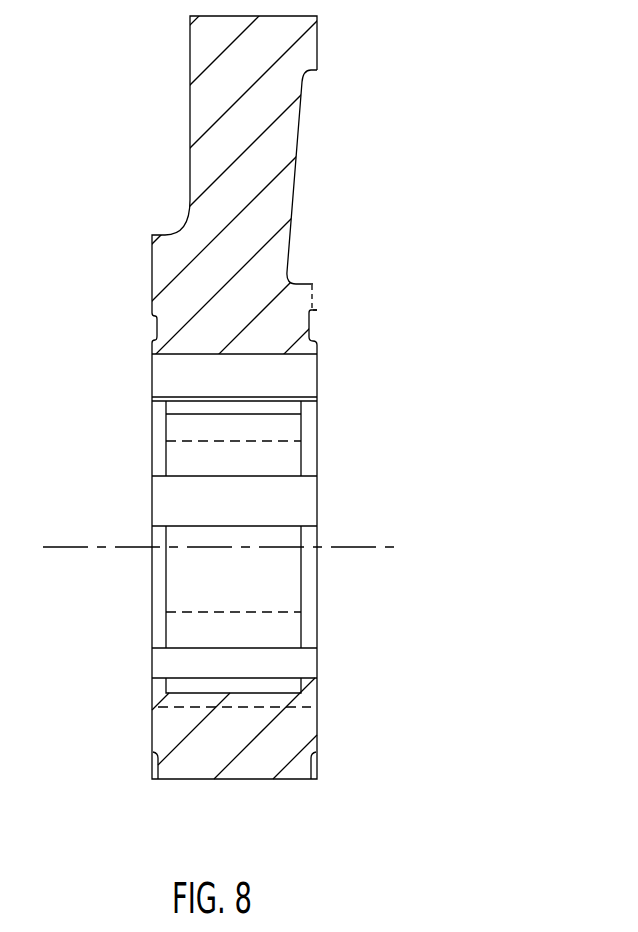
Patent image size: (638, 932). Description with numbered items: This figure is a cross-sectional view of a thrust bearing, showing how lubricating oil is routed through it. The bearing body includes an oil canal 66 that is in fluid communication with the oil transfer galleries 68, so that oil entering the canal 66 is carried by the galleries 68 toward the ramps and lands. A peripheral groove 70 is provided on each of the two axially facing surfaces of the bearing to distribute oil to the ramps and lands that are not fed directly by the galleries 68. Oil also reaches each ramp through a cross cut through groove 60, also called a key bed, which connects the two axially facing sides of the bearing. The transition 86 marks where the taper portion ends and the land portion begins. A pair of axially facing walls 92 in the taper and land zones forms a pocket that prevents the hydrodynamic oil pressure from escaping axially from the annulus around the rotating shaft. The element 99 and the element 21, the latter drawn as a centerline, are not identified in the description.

The spindle body 99 is at (215, 182).
The oil canal 66 is at (305, 240).
The oil transfer galleries 68 is at (318, 300).
The peripheral groove 70 is at (150, 326).
The cross cut through groove 60 is at (287, 668).
The transition 86 is at (208, 440).
The axially facing walls 92 is at (170, 458).
The axis of rotation 21 is at (130, 547).